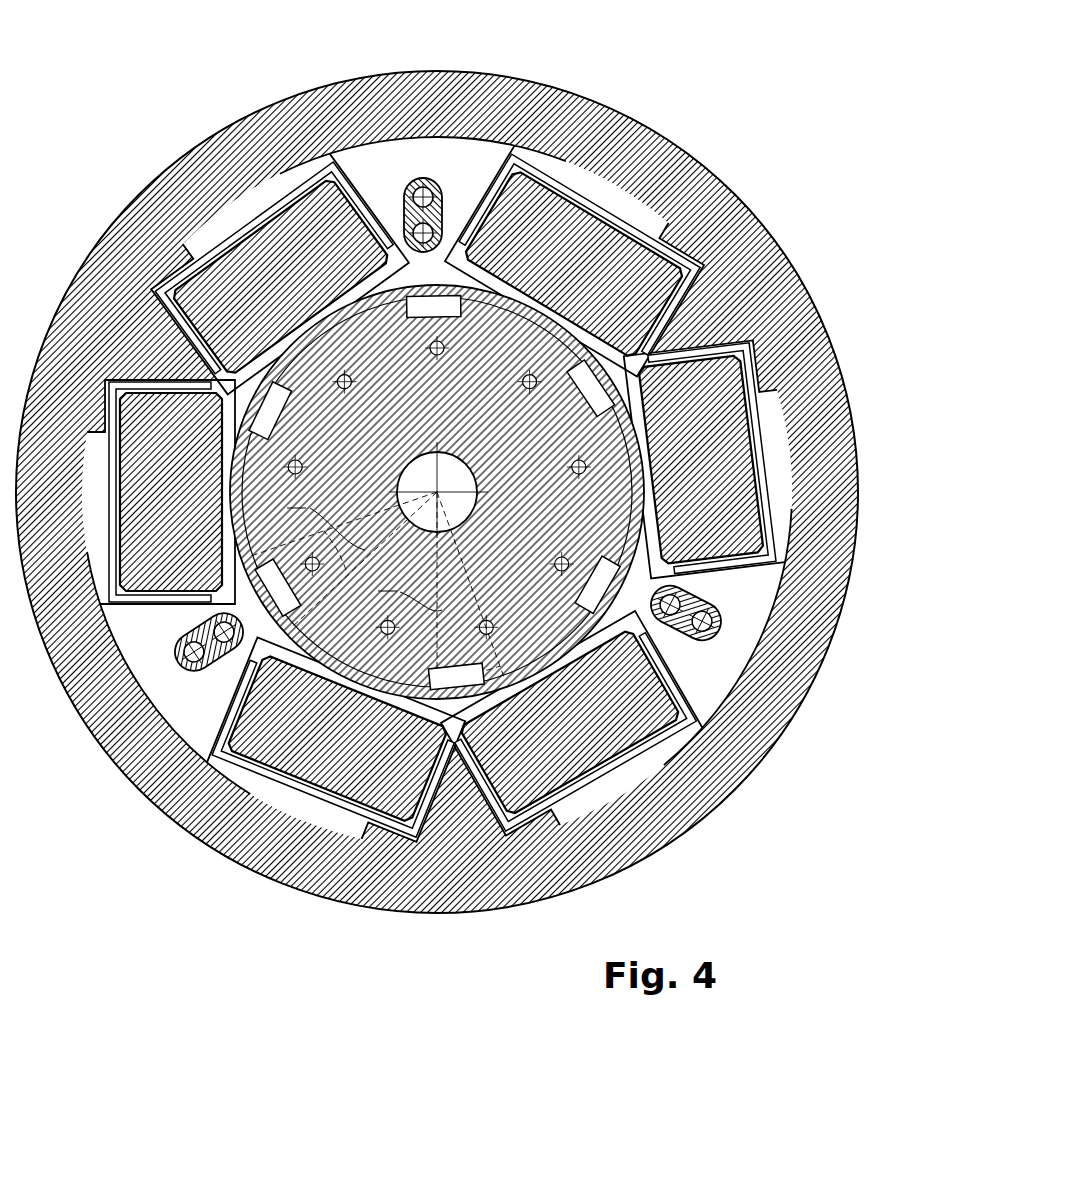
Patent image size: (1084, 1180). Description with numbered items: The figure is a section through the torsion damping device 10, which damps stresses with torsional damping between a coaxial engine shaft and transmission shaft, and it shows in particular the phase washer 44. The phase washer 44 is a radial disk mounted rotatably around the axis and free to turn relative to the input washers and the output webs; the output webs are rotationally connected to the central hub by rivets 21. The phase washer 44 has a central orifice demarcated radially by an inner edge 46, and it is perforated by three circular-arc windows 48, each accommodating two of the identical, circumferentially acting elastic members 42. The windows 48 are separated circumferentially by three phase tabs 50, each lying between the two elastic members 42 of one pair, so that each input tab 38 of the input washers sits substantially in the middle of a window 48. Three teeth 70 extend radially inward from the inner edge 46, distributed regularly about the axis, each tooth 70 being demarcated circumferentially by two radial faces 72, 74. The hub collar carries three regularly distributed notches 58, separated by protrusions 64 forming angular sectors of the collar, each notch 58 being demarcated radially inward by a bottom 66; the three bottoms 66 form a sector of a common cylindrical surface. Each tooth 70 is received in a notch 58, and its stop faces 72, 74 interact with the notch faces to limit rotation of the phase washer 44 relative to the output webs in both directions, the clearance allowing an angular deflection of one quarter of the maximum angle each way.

The torsion damping device 10 is at (676, 96).
The input tabs 38 is at (458, 195).
The phase tabs 50 is at (168, 368).
The radial face 72 is at (598, 393).
The teeth 70 is at (622, 534).
The radial face 74 is at (662, 578).
The inner edge 46 is at (575, 620).
The rivets 21 is at (658, 666).
The circular-arc windows 48 is at (652, 765).
The protrusions 64 is at (566, 623).
The phase washer 44 is at (556, 843).
The elastic members 42 is at (297, 748).
The notches 58 is at (250, 660).
The bottom 66 is at (243, 598).